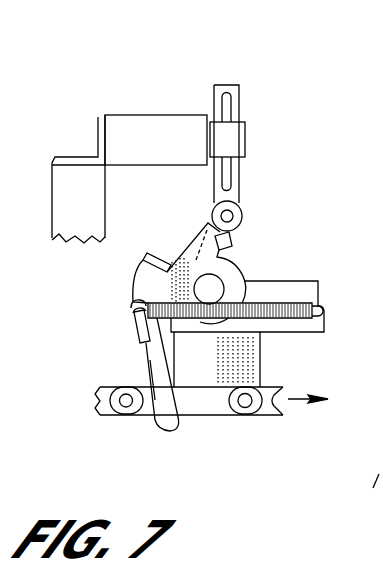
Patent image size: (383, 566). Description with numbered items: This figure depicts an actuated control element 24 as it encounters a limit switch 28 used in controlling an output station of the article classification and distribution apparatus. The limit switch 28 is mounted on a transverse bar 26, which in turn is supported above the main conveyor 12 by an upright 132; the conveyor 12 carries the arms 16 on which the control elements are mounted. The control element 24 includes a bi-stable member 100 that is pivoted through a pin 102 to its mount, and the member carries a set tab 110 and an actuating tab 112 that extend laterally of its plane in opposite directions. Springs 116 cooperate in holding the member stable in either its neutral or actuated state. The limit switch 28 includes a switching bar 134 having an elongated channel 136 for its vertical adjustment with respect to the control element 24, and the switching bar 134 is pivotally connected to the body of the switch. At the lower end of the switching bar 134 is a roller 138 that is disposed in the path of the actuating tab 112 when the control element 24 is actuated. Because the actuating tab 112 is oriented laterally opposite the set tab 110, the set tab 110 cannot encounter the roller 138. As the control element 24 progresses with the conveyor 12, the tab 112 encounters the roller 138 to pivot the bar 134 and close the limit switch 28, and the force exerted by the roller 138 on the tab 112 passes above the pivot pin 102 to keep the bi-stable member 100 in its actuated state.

The main conveyor 12 is at (228, 417).
The arm 16 is at (262, 348).
The control element 24 is at (151, 357).
The bar 26 is at (98, 117).
The limit switch 28 is at (147, 115).
The bi-stable member 100 is at (152, 325).
The pin 102 is at (216, 287).
The set tab 110 is at (161, 261).
The actuating tab 112 is at (232, 245).
The springs 116 is at (289, 305).
The upright 132 is at (84, 223).
The switching bar 134 is at (226, 85).
The elongated channel 136 is at (228, 112).
The roller 138 is at (241, 215).